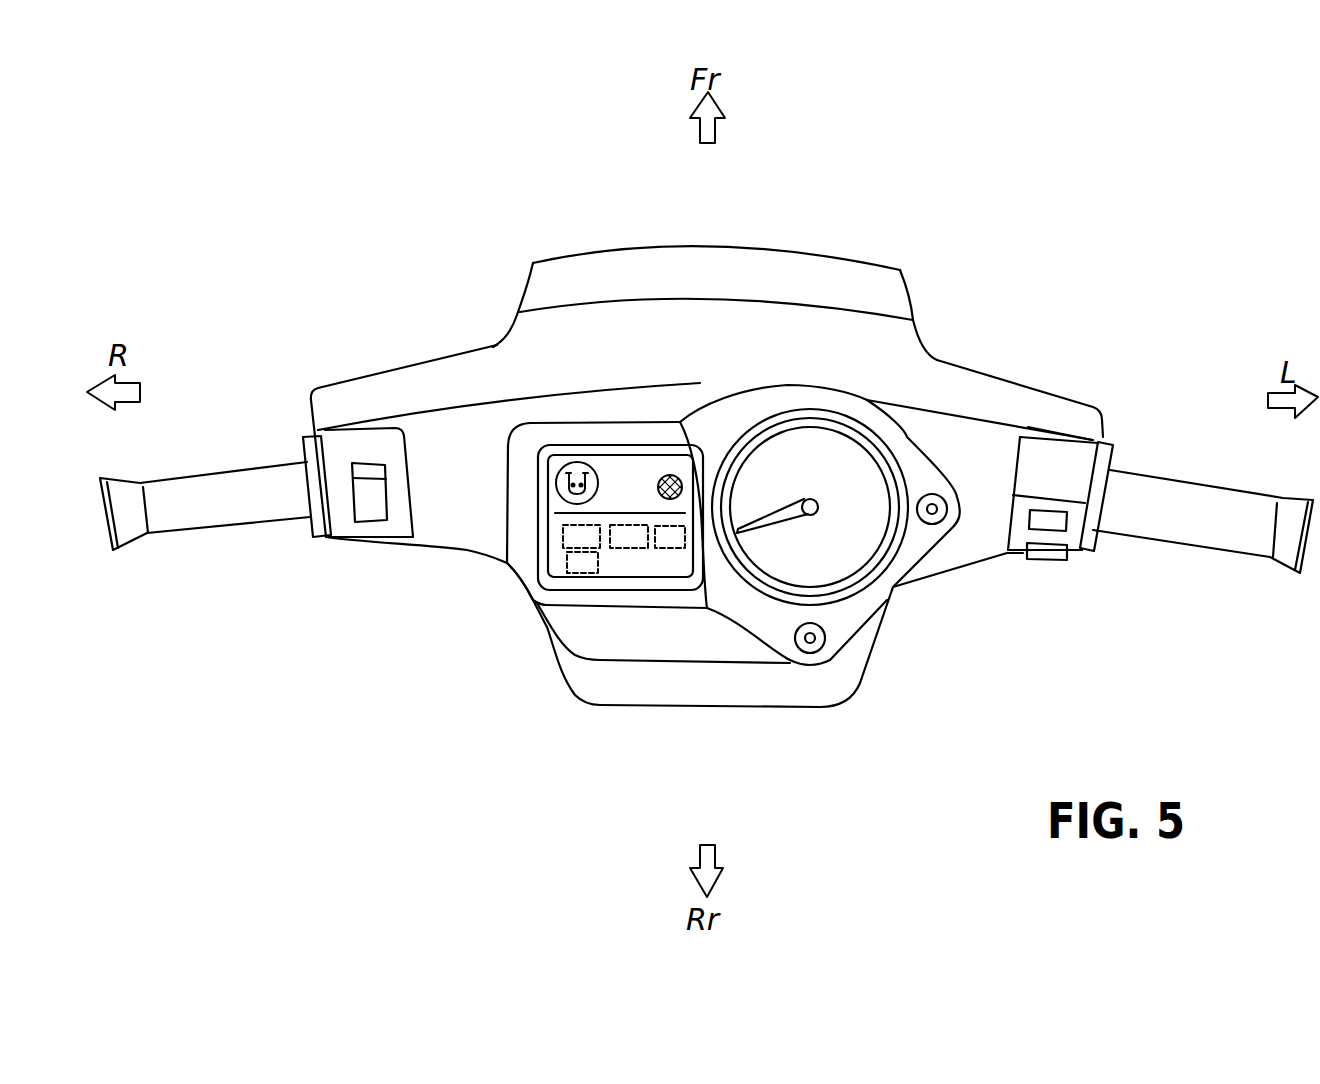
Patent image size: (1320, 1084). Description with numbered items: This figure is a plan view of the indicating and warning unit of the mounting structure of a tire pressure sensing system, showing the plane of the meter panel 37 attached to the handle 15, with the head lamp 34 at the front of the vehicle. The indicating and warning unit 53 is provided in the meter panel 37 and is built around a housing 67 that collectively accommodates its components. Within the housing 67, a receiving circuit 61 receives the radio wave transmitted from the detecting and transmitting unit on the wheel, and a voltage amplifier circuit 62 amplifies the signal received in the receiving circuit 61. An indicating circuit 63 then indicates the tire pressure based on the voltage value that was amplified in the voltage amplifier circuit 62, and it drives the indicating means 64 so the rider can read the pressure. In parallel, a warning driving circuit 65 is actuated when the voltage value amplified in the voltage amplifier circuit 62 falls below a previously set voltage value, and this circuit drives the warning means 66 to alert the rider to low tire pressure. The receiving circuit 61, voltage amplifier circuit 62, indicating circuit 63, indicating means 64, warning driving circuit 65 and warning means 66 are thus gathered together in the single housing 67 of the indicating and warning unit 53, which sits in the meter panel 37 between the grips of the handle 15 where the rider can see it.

The handle 15 is at (1140, 473).
The head lamp 34 is at (820, 250).
The meter panel 37 is at (910, 438).
The indicating and warning unit 53 is at (617, 423).
The receiving circuit 61 is at (563, 538).
The voltage amplifier circuit 62 is at (623, 552).
The indicating circuit 63 is at (670, 552).
The indicating means 64 is at (580, 462).
The warning driving circuit 65 is at (565, 562).
The warning means 66 is at (674, 472).
The housing 67 is at (537, 475).